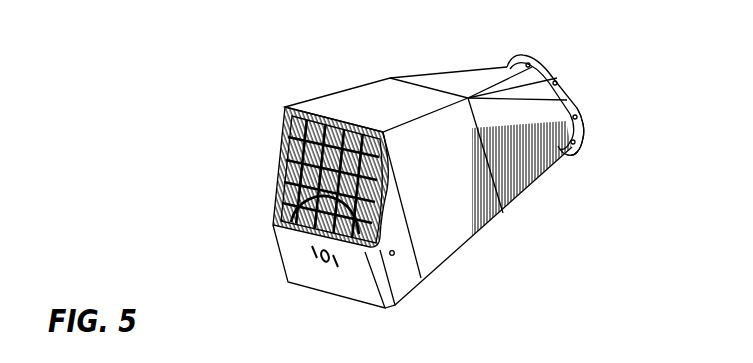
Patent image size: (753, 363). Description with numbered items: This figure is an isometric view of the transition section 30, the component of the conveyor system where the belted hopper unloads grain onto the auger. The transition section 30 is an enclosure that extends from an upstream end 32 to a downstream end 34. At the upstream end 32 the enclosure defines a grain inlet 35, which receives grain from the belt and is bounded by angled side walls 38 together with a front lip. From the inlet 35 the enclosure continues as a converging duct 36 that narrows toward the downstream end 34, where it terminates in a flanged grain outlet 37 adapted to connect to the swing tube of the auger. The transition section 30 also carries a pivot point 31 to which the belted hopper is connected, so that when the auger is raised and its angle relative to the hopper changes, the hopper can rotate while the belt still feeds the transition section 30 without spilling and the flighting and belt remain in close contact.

The transition section 30 is at (256, 78).
The pivot point 31 is at (281, 219).
The upstream end 32 is at (278, 135).
The downstream end 34 is at (590, 156).
The grain inlet 35 is at (328, 221).
The converging duct 36 is at (348, 280).
The grain outlet 37 is at (568, 95).
The angled side walls 38 is at (413, 280).